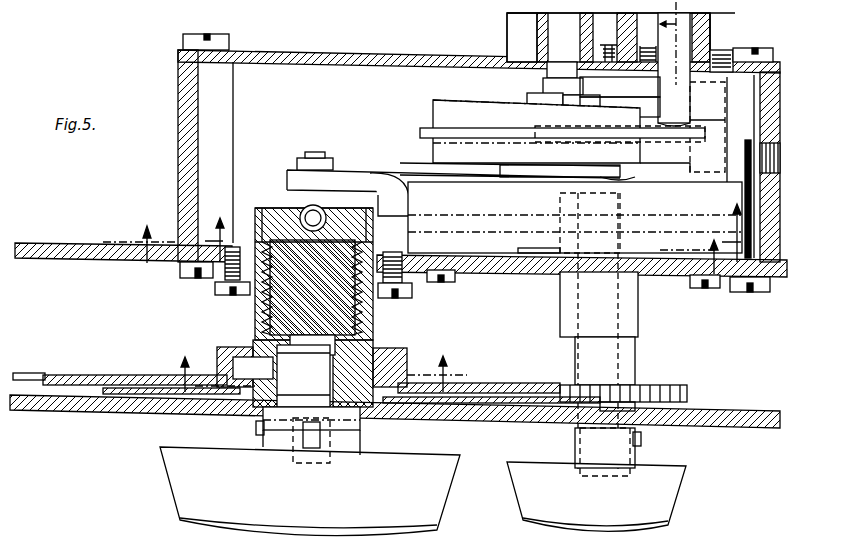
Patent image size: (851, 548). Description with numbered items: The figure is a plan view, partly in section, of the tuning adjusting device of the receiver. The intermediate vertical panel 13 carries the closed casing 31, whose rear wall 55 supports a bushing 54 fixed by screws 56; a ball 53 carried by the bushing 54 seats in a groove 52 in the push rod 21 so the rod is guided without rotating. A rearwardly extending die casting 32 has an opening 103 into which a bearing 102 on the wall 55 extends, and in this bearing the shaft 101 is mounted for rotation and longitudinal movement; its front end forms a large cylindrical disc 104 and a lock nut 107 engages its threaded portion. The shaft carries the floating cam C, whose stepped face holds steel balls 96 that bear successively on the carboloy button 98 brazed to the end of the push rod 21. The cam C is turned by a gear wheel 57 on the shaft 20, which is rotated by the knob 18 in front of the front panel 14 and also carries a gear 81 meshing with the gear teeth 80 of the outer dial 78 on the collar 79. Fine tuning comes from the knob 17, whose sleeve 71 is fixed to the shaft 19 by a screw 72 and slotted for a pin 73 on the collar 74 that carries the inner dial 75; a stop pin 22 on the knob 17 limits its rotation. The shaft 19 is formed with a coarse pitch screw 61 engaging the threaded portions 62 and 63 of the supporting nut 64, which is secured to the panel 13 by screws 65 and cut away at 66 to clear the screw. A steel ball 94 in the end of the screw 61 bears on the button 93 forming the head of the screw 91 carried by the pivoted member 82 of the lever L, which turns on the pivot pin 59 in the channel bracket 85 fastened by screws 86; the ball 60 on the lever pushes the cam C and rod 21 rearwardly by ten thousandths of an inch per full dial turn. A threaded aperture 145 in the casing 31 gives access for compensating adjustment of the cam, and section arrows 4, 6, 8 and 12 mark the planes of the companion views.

The rear wall 55 is at (287, 58).
The closed casing 31 is at (185, 166).
The threaded aperture 145 is at (765, 155).
The pivot pin 59 is at (739, 190).
The intermediate vertical panel 13 is at (62, 245).
The front panel 14 is at (32, 412).
The channel shaped supporting bracket 85 is at (501, 268).
The die casting 32 is at (507, 20).
The opening 103 is at (520, 35).
The bearing 102 is at (540, 46).
The screws 56 is at (614, 48).
The miniature vacuum tube 12 is at (648, 297).
The ball 53 is at (728, 52).
The bushing 54 is at (706, 28).
The shaft 101 is at (545, 87).
The lock nut 107 is at (535, 104).
The push rod 21 is at (658, 84).
The steel ball 96 is at (660, 112).
The groove 52 is at (700, 97).
The button 98 is at (690, 121).
The floating cam C is at (433, 100).
The gear wheel 57 is at (522, 140).
The ball 60 is at (668, 176).
The pivoted member 82 is at (395, 177).
The lever L is at (372, 162).
The threaded screw 91 is at (312, 153).
The threaded portion 63 is at (383, 218).
The cylindrical disc 104 is at (527, 172).
The shaft 20 is at (560, 341).
The gear 81 is at (668, 393).
The tuning control knob 18 is at (522, 503).
The coarse pitch screw 61 is at (258, 305).
The threaded portion 62 is at (360, 337).
The cut away portion 66 is at (372, 310).
The steel ball 94 is at (300, 204).
The steel button 93 is at (322, 210).
The pin 73 is at (330, 373).
The collar 74 is at (240, 350).
The collar 79 is at (398, 350).
The second dial 78 is at (80, 376).
The gear teeth 80 is at (40, 373).
The circular dial 75 is at (115, 392).
The sleeve portion 71 is at (360, 441).
The shaft 19 is at (352, 421).
The stop pin 22 is at (310, 449).
The screw 72 is at (255, 426).
The tuning control knob 17 is at (178, 500).
The supporting nut 64 is at (245, 223).
The screws 65 is at (215, 288).
The screws 86 is at (446, 283).
The section line 6 is at (410, 250).
The section line 4 is at (473, 233).
The section line 8 is at (315, 374).